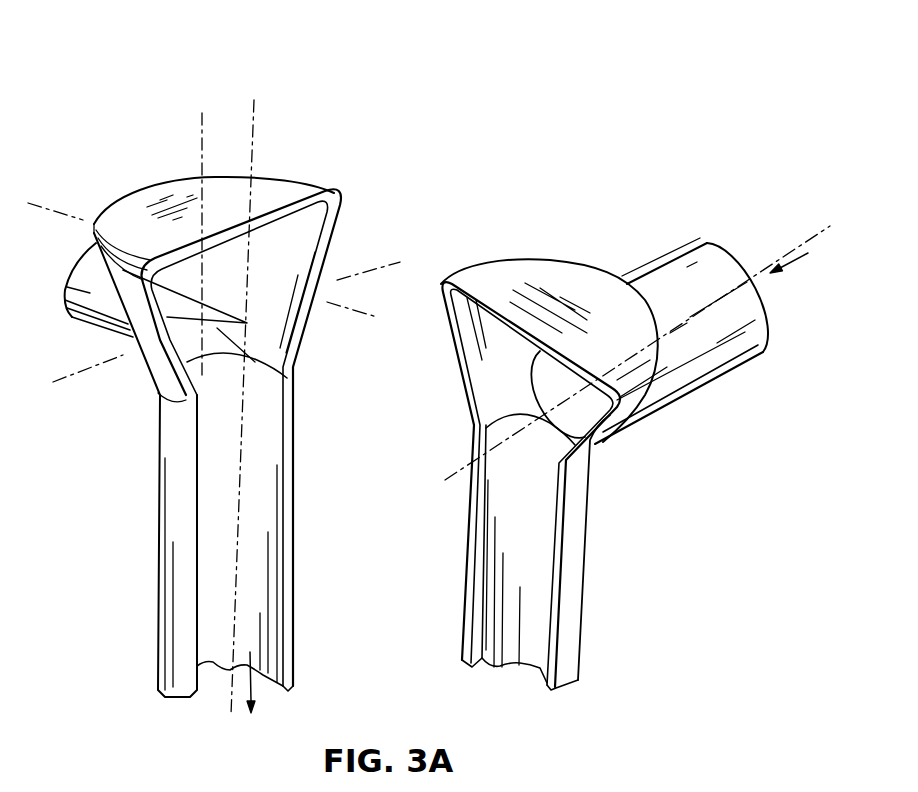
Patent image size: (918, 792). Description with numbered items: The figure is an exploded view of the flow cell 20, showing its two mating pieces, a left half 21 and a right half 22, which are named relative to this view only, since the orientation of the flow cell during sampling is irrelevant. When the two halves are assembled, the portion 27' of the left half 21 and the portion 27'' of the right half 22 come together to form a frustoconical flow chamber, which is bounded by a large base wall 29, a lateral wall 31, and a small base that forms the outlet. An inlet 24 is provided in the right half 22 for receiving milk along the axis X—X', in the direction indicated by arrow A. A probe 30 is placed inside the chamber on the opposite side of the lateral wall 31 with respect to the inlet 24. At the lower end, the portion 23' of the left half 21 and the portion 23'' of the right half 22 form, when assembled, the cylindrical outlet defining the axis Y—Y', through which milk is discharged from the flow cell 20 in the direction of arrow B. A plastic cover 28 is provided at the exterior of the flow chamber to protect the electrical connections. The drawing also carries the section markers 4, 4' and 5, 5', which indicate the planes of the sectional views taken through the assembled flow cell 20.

The flow cell 20 is at (455, 70).
The left half 21 is at (176, 150).
The right half 22 is at (590, 197).
The portion of the left half forming the outlet 23' is at (229, 443).
The portion of the right half forming the outlet 23'' is at (560, 486).
The inlet 24 is at (582, 408).
The portion of the left half forming the flow chamber 27' is at (252, 220).
The portion of the right half forming the flow chamber 27'' is at (554, 330).
The plastic cover 28 is at (67, 312).
The large base wall 29 is at (580, 262).
The probe 30 is at (292, 380).
The lateral wall 31 is at (458, 368).
The section line 4- 4 is at (55, 235).
The section line 4-4 4' is at (352, 334).
The section line 5- 5 is at (88, 391).
The section line 5-5 5' is at (381, 271).